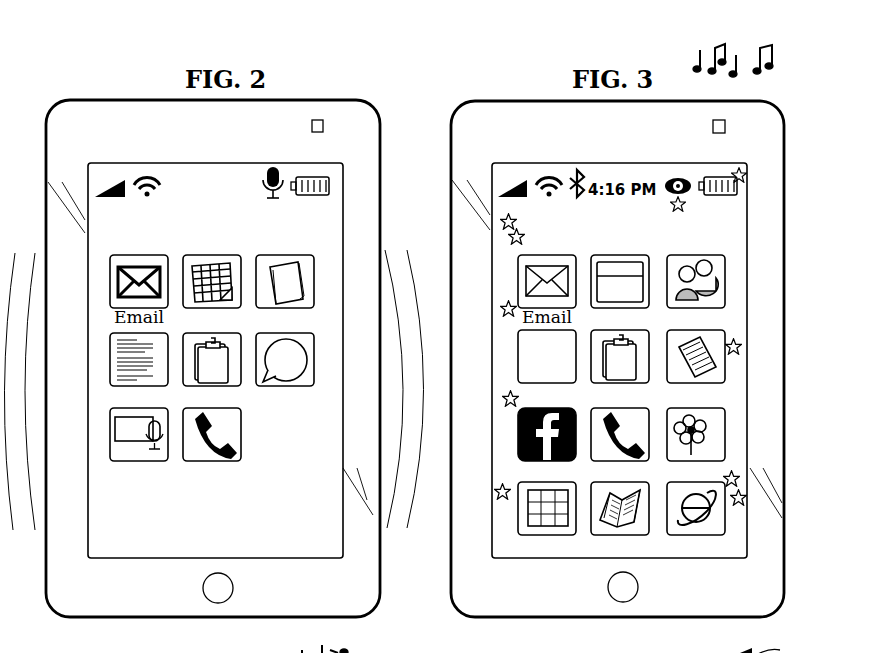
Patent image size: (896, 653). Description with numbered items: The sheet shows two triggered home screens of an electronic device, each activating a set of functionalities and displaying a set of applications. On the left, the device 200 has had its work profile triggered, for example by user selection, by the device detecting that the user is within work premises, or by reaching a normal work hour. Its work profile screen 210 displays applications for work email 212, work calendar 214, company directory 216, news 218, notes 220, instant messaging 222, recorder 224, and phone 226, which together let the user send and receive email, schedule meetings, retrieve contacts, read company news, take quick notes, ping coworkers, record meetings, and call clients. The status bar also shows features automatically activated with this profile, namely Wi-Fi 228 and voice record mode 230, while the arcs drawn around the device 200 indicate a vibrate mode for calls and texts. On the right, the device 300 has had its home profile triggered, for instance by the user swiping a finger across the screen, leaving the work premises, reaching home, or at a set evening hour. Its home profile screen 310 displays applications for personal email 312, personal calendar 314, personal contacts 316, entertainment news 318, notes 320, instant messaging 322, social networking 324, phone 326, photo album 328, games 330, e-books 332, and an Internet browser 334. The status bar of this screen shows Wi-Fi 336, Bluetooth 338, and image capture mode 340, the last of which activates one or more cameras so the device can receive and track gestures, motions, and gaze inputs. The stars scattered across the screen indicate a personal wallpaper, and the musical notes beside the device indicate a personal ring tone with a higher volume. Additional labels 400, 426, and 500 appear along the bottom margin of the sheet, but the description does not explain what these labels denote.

In FIG. 2, the device 200 is at (384, 102).
In FIG. 2, the work profile screen 210 is at (218, 133).
In FIG. 2, the work email application 212 is at (138, 247).
In FIG. 2, the work calendar application 214 is at (240, 255).
In FIG. 2, the company directory application 216 is at (293, 253).
In FIG. 2, the news application 218 is at (118, 333).
In FIG. 2, the notes application 220 is at (240, 343).
In FIG. 2, the instant messaging application 222 is at (313, 337).
In FIG. 2, the recorder application 224 is at (113, 437).
In FIG. 2, the phone application 226 is at (242, 448).
In FIG. 2, the Wi-Fi 228 is at (140, 173).
In FIG. 2, the voice record mode 230 is at (273, 170).
In FIG. 2, the ambient sound waves 400 is at (400, 652).
In FIG. 2, the music audio signal 426 is at (306, 641).
In FIG. 3, the device 300 is at (788, 102).
In FIG. 3, the home profile screen 310 is at (498, 165).
In FIG. 3, the personal email application 312 is at (543, 250).
In FIG. 3, the personal calendar application 314 is at (648, 255).
In FIG. 3, the personal contacts application 316 is at (724, 272).
In FIG. 3, the entertainment news application 318 is at (518, 358).
In FIG. 3, the notes application 320 is at (648, 342).
In FIG. 3, the instant messaging application 322 is at (723, 332).
In FIG. 3, the social networking application 324 is at (518, 437).
In FIG. 3, the phone application 326 is at (592, 460).
In FIG. 3, the photo album application 328 is at (725, 438).
In FIG. 3, the games application 330 is at (520, 507).
In FIG. 3, the e-books application 332 is at (645, 497).
In FIG. 3, the Internet browser 334 is at (723, 515).
In FIG. 3, the Wi-Fi 336 is at (540, 173).
In FIG. 3, the Bluetooth 338 is at (577, 177).
In FIG. 3, the image capture mode 340 is at (678, 176).
In FIG. 3, the music audio signal 500 is at (778, 640).